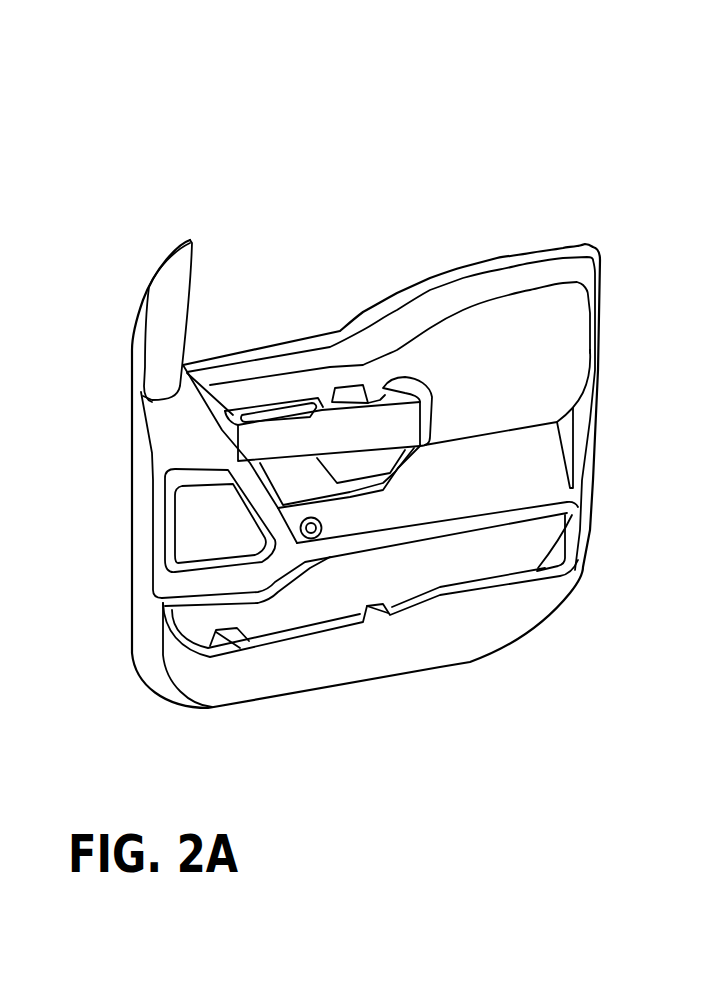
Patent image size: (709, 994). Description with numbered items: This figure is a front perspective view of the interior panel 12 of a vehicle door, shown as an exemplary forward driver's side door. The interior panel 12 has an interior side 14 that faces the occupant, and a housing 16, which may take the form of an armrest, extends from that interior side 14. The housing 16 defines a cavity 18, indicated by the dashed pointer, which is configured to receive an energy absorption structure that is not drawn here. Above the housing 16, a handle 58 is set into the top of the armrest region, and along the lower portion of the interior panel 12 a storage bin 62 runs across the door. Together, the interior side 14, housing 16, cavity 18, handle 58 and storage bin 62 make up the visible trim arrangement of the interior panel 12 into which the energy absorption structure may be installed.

The interior panel 12 is at (445, 218).
The interior side 14 is at (557, 317).
The housing 16 is at (495, 418).
The cavity 18 is at (548, 391).
The handle 58 is at (355, 375).
The storage bin 62 is at (483, 617).